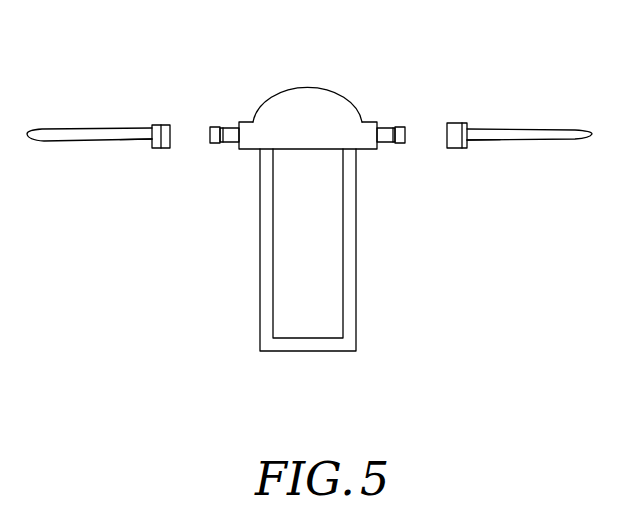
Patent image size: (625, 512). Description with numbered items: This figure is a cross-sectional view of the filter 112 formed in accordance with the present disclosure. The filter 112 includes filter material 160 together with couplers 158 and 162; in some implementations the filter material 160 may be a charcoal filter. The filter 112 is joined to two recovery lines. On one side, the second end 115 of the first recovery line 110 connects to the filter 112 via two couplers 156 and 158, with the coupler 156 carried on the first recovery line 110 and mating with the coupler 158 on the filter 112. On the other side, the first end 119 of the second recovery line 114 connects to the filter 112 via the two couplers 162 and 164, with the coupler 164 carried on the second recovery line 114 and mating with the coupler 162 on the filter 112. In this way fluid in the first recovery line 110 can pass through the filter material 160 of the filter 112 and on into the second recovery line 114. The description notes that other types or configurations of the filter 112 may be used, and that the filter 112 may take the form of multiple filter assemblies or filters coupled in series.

The first recovery line 110 is at (62, 129).
The filter 112 is at (308, 82).
The second recovery line 114 is at (553, 130).
The second end 115 is at (134, 141).
The first end 119 is at (478, 141).
The coupler 156 is at (158, 125).
The coupler 158 is at (222, 128).
The filter material 160 is at (287, 252).
The coupler 162 is at (395, 128).
The coupler 164 is at (457, 123).